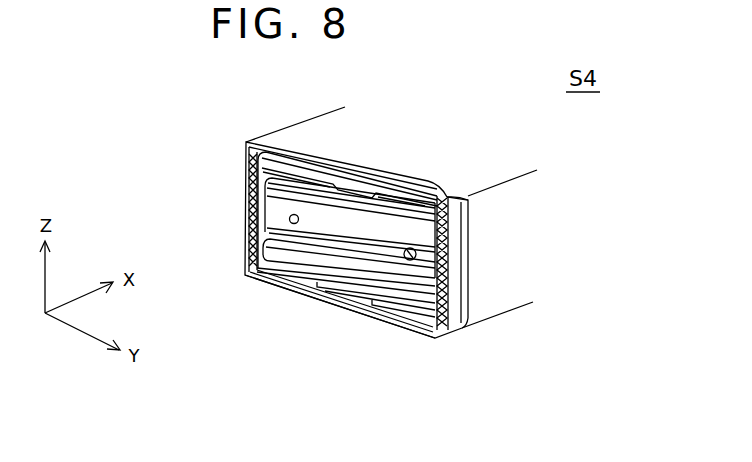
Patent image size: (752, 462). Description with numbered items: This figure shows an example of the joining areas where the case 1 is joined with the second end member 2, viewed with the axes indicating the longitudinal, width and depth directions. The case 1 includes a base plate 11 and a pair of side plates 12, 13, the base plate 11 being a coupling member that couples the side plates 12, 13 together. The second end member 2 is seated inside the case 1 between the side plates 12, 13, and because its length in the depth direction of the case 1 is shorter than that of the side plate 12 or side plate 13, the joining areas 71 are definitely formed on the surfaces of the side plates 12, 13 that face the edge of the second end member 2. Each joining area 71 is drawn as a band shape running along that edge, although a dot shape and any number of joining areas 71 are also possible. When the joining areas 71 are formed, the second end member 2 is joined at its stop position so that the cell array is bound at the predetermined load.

The case 1 is at (431, 105).
The second end member 2 is at (342, 134).
The base plate 11 is at (366, 317).
The side plate 12 is at (295, 125).
The side plate 13 is at (483, 187).
The joining area 71 is at (247, 195).